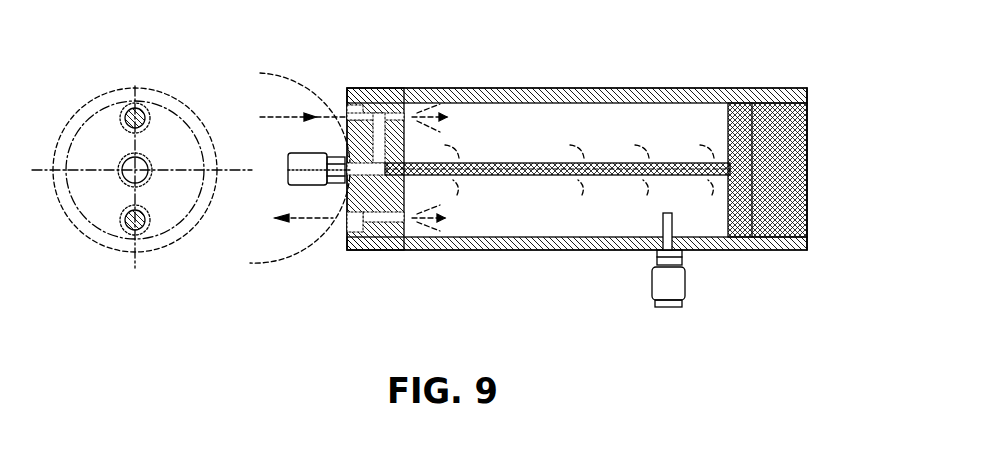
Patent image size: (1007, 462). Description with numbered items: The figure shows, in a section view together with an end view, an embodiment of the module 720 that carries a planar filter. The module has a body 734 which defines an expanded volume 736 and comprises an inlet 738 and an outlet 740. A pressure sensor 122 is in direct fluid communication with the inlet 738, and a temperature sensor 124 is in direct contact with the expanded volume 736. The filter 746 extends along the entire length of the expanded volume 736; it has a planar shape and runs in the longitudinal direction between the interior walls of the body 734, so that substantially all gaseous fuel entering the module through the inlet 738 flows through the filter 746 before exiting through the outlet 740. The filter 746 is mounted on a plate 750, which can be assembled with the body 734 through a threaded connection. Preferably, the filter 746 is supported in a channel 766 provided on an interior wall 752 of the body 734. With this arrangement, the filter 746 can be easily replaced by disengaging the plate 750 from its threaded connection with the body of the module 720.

The module 720 is at (485, 49).
The body 734 is at (571, 90).
The expanded volume 736 is at (643, 128).
The inlet 738 is at (143, 112).
The outlet 740 is at (143, 230).
The pressure sensor 122 is at (318, 163).
The plate 750 is at (808, 145).
The channel 766 is at (402, 167).
The interior wall 752 is at (407, 195).
The filter 746 is at (603, 175).
The temperature sensor 124 is at (672, 279).